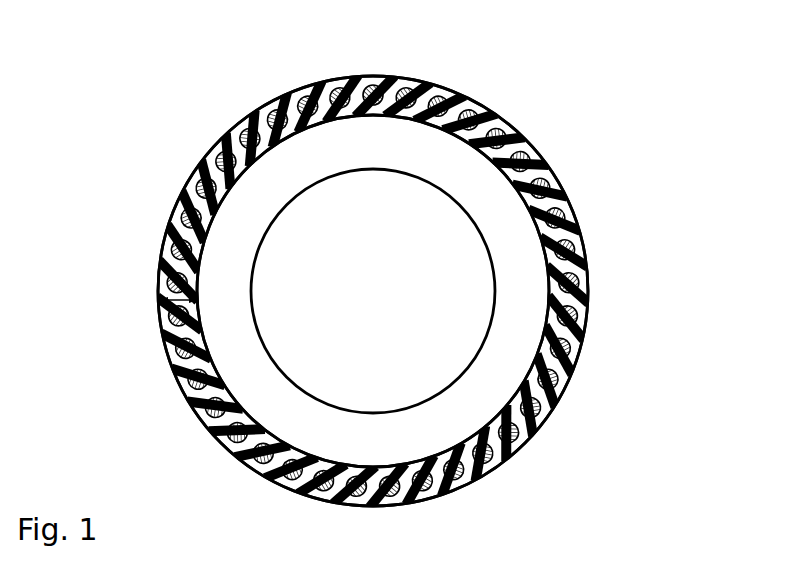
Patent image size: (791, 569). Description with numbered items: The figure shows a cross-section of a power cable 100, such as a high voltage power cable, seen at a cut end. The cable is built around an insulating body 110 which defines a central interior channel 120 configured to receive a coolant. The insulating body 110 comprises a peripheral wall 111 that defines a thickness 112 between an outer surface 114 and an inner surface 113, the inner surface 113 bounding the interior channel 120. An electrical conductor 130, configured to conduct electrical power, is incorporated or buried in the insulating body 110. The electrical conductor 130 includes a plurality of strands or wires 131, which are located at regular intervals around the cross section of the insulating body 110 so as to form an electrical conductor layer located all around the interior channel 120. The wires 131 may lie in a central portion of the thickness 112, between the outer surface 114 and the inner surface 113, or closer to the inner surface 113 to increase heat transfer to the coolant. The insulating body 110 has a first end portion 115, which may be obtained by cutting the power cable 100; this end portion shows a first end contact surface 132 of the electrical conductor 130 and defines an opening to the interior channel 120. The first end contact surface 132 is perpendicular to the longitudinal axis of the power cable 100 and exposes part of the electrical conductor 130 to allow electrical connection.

The power cable 100 is at (408, 273).
The insulating body 110 is at (461, 273).
The peripheral wall 111 is at (463, 97).
The thickness 112 is at (165, 302).
The inner surface 113 is at (486, 190).
The outer surface 114 is at (550, 167).
The first end portion 115 is at (220, 435).
The interior channel 120 is at (475, 260).
The electrical conductor 130 is at (466, 291).
The wire 131 is at (542, 403).
The first end contact surface 132 is at (283, 475).